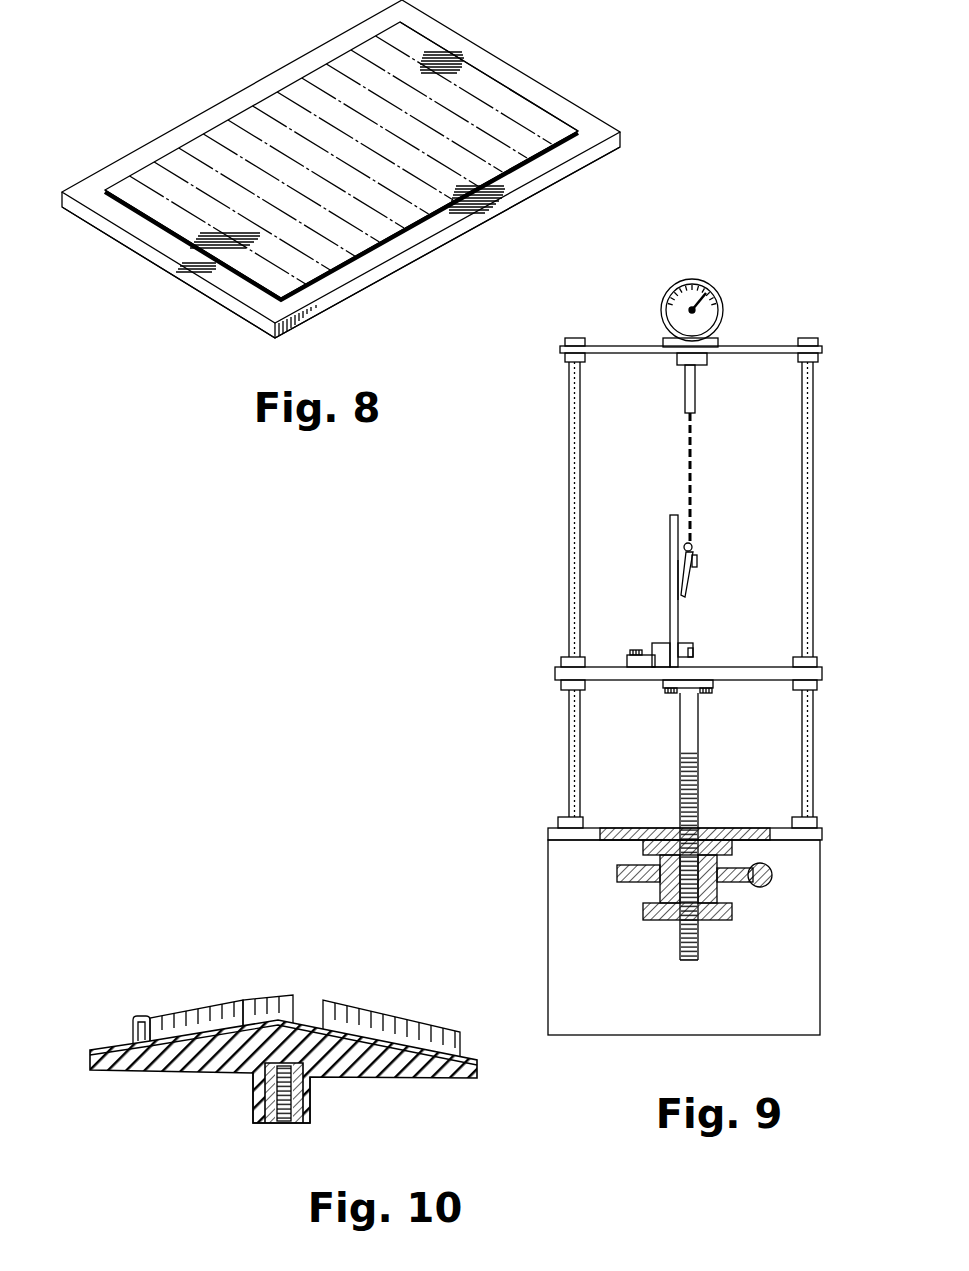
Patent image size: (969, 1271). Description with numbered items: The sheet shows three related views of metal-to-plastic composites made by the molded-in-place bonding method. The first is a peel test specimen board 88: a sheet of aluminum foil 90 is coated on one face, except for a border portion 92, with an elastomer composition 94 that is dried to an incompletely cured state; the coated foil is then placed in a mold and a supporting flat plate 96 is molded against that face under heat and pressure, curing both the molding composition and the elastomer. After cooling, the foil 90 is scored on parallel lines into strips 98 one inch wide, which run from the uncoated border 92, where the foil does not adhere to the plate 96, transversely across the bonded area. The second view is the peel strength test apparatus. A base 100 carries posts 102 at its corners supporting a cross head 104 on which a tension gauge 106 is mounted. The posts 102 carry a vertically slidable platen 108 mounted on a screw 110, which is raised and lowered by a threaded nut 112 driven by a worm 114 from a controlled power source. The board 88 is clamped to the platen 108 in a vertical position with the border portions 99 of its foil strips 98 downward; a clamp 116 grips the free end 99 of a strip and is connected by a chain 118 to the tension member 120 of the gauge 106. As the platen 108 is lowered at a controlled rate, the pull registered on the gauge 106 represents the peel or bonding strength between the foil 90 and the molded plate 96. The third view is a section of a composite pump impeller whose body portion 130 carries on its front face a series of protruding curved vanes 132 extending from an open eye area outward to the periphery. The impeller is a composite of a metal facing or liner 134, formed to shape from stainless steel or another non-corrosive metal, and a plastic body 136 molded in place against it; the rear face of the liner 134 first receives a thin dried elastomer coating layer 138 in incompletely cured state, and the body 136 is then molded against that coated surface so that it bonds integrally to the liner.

In FIG. 8, the peel test specimen board 88 is at (566, 88).
In FIG. 9, the peel test specimen board 88 is at (664, 622).
In FIG. 8, the aluminum foil 90 is at (488, 93).
In FIG. 8, the border portion 92 is at (558, 132).
In FIG. 8, the elastomer composition coating 94 is at (250, 283).
In FIG. 8, the supporting flat plate 96 is at (535, 190).
In FIG. 9, the supporting flat plate 96 is at (673, 552).
In FIG. 8, the strips 98 is at (351, 47).
In FIG. 9, the strips 98 is at (683, 595).
In FIG. 8, the border portion of strip 99 is at (345, 263).
In FIG. 9, the base 100 is at (807, 972).
In FIG. 9, the posts 102 is at (808, 553).
In FIG. 9, the cross head 104 is at (787, 347).
In FIG. 9, the tension gauge 106 is at (719, 300).
In FIG. 9, the platen 108 is at (767, 673).
In FIG. 9, the screw 110 is at (698, 787).
In FIG. 9, the threaded nut 112 is at (730, 882).
In FIG. 9, the worm 114 is at (769, 885).
In FIG. 9, the clamp 116 is at (695, 557).
In FIG. 9, the chain 118 is at (692, 485).
In FIG. 9, the tension member 120 is at (685, 403).
In FIG. 10, the body portion 130 is at (225, 1073).
In FIG. 10, the vanes 132 is at (397, 1017).
In FIG. 10, the liner 134 is at (110, 1048).
In FIG. 10, the plastic body 136 is at (133, 1067).
In FIG. 10, the elastomer coating layer 138 is at (212, 1013).